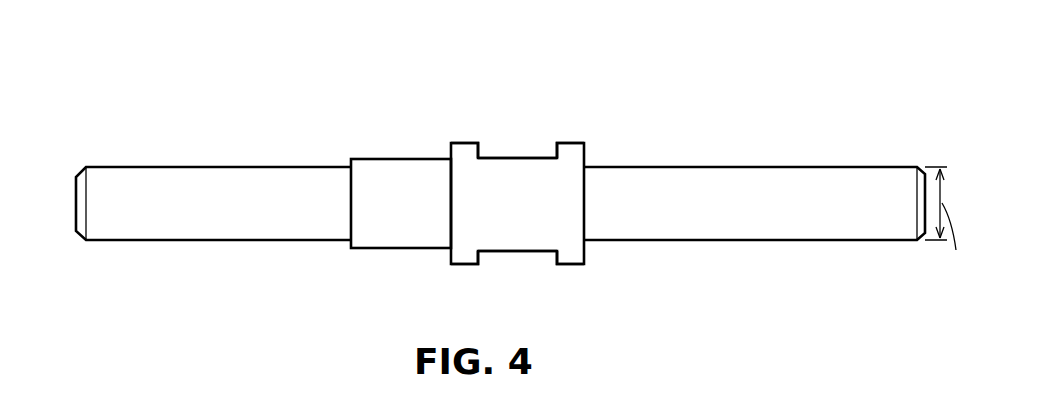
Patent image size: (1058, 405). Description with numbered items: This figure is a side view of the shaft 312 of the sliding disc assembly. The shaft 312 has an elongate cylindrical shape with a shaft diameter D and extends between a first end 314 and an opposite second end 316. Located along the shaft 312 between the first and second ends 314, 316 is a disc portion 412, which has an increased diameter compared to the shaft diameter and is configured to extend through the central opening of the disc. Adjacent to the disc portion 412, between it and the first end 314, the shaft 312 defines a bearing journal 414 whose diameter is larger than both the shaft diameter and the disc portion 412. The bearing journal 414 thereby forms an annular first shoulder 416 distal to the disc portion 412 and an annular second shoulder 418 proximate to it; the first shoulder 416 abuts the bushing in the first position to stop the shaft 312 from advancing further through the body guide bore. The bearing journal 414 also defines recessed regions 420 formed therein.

The shaft 312 is at (677, 91).
The first end 314 is at (888, 186).
The second end 316 is at (95, 203).
The disc portion 412 is at (400, 180).
The bearing journal 414 is at (560, 217).
The first shoulder 416 is at (586, 150).
The second shoulder 418 is at (445, 254).
The recessed regions 420 is at (504, 145).